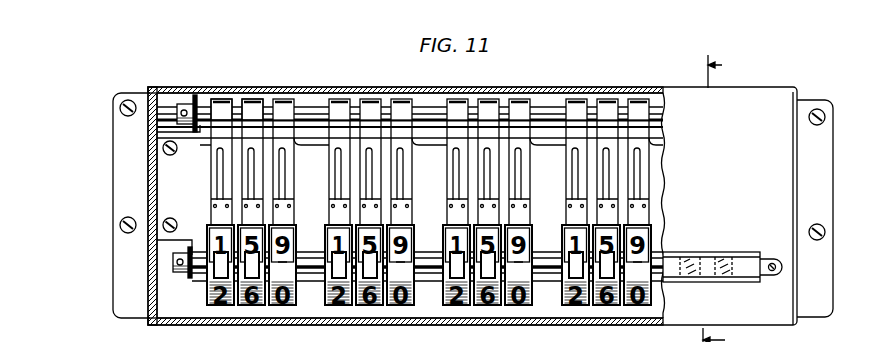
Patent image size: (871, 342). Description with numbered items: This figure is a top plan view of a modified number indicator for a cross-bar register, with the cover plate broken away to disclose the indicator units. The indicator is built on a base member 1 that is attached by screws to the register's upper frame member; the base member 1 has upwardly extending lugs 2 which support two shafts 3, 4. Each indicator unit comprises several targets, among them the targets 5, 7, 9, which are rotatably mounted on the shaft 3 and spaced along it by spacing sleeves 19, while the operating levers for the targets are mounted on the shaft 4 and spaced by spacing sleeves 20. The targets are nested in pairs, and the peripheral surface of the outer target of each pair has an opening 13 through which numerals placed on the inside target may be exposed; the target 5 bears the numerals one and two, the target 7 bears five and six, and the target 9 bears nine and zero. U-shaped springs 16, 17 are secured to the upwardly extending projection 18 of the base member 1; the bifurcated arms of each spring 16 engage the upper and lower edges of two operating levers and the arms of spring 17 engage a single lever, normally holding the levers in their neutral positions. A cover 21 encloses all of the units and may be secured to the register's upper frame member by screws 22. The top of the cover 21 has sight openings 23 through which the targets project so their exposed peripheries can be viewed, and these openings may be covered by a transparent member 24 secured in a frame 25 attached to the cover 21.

The base member 1 is at (308, 318).
The upwardly extending lugs 2 is at (196, 96).
The shaft 3 is at (173, 263).
The shaft 4 is at (178, 108).
The target 5 is at (225, 305).
The target 7 is at (256, 305).
The target 9 is at (287, 305).
The opening 13 is at (218, 262).
The U-shaped spring 16 is at (222, 107).
The U-shaped spring 17 is at (280, 107).
The upwardly extending projection 18 is at (318, 140).
The spacing sleeves 19 is at (205, 283).
The spacing sleeves 20 is at (417, 108).
The cover 21 is at (745, 105).
The screws 22 is at (120, 108).
The sight openings 23 is at (725, 280).
The transparent member 24 is at (745, 280).
The frame 25 is at (748, 252).